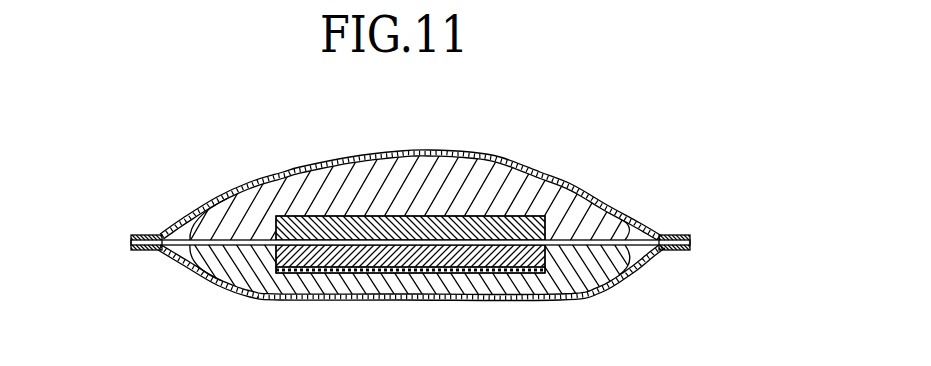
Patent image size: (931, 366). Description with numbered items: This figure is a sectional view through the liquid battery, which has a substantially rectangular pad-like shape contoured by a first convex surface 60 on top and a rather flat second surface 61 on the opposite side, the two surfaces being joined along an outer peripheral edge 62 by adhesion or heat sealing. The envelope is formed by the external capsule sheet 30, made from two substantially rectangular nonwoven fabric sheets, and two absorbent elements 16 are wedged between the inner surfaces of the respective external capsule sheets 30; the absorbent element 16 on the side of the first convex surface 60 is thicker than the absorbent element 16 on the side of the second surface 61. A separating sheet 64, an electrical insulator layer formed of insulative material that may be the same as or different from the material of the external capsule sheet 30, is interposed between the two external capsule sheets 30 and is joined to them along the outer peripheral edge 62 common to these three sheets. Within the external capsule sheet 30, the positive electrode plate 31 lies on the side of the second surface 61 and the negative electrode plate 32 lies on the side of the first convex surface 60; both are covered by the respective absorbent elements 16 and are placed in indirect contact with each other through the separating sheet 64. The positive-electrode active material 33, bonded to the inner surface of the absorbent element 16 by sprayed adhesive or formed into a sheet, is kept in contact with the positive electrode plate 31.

The absorbent element 16 is at (567, 203).
The external capsule sheet 30 is at (406, 246).
The positive electrode plate 31 is at (527, 263).
The negative electrode plate 32 is at (300, 215).
The positive-electrode active material 33 is at (426, 272).
The first convex surface 60 is at (448, 150).
The second surface 61 is at (367, 298).
The outer peripheral edge 62 is at (143, 234).
The separating sheet 64 is at (643, 238).